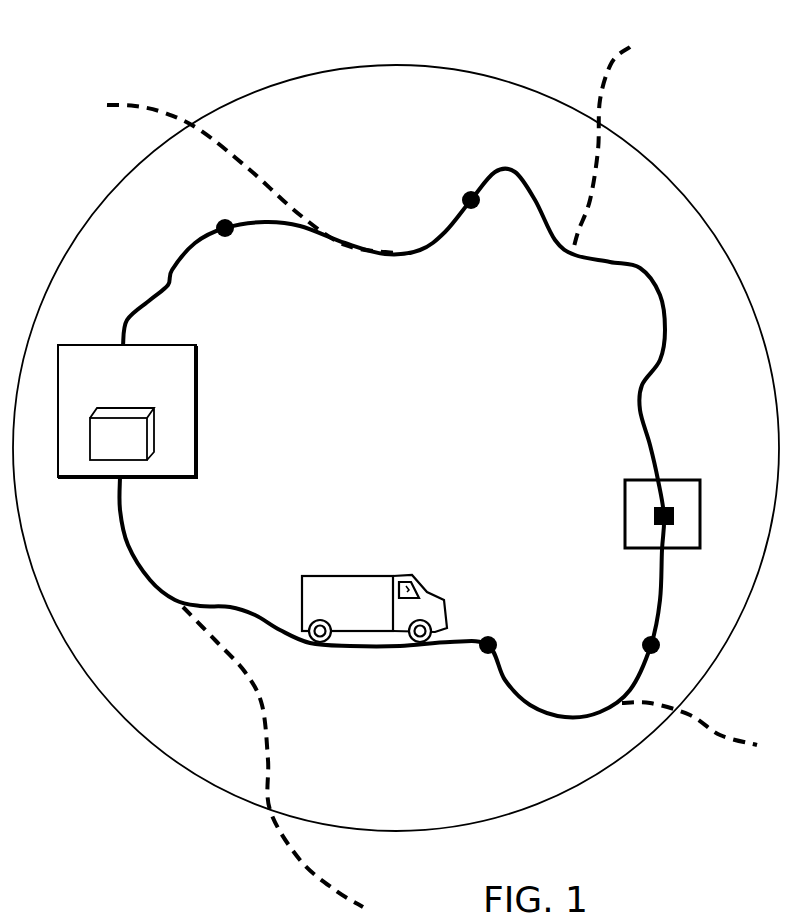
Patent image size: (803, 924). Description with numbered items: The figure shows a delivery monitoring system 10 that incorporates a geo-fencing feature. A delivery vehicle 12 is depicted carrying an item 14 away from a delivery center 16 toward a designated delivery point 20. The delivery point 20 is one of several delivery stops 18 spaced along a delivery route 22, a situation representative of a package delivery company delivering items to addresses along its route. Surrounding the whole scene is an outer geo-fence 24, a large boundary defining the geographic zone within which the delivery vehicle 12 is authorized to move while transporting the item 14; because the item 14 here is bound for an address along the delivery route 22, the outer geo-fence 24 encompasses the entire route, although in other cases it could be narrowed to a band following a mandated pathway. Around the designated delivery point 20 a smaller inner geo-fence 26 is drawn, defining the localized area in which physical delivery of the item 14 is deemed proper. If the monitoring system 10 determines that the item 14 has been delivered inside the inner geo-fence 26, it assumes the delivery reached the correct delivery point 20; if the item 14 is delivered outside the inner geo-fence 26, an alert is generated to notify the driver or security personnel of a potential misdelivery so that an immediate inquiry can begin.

The delivery monitoring system 10 is at (149, 62).
The delivery vehicle 12 is at (355, 575).
The item 14 is at (150, 438).
The delivery center 16 is at (197, 393).
The delivery stops 18 is at (232, 236).
The designated delivery point 20 is at (653, 517).
The delivery route 22 is at (455, 646).
The outer geo-fence 24 is at (490, 78).
The inner geo-fence 26 is at (623, 500).